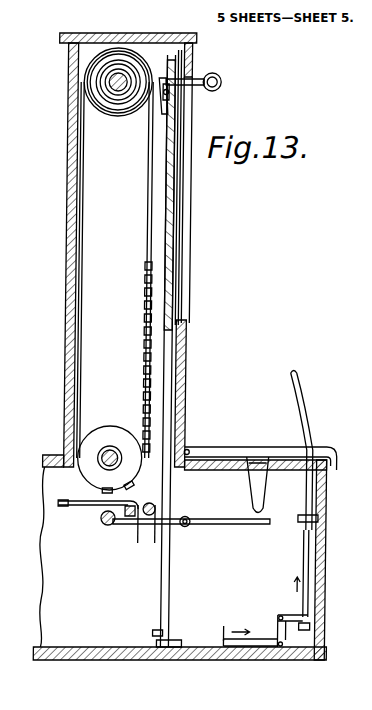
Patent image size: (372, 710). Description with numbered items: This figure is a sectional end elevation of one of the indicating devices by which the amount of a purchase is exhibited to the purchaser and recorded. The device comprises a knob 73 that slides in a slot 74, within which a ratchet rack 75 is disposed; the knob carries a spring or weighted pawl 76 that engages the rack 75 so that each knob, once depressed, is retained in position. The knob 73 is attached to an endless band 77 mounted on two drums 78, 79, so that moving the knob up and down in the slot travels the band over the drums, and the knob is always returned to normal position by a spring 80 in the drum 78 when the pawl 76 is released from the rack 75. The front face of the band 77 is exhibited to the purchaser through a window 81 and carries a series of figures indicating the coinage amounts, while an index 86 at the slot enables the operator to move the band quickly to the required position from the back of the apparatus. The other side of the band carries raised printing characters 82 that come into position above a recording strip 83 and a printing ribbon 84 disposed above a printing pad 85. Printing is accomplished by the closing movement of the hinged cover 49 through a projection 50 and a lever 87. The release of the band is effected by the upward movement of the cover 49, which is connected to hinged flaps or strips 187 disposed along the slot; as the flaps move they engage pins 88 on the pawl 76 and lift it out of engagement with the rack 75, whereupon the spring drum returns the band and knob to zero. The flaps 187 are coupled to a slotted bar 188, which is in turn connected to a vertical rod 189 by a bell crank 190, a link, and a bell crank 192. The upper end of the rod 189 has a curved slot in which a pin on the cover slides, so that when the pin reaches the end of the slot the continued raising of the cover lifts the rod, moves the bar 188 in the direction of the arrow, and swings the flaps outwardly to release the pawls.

The drum 78 is at (134, 62).
The window 81 is at (66, 88).
The spring 80 is at (108, 96).
The pawl 76 is at (157, 92).
The pins 88 is at (162, 100).
The knob 73 is at (220, 80).
The index 86 is at (190, 198).
The slot 74 is at (179, 225).
The ratchet rack 75 is at (173, 297).
The printing characters 82 is at (150, 390).
The flaps or hinged strips 187 is at (163, 572).
The endless band 77 is at (145, 237).
The drum 79 is at (97, 437).
The hinged cover 49 is at (216, 447).
The projection 50 is at (274, 485).
The printing ribbon 84 is at (63, 490).
The recording strip 83 is at (70, 506).
The printing pad 85 is at (106, 521).
The lever 87 is at (238, 526).
The vertical rod 189 is at (305, 546).
The bell crank 192 is at (296, 630).
The bell crank 190 is at (243, 622).
The slotted bar 188 is at (142, 661).